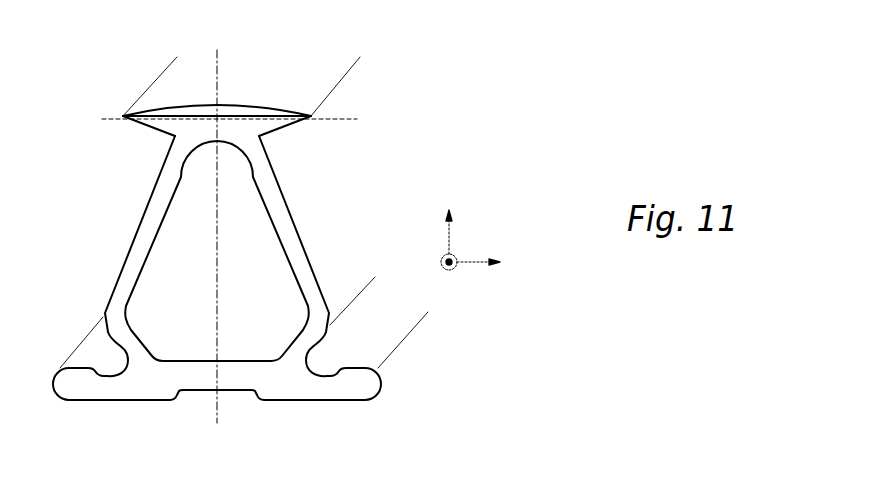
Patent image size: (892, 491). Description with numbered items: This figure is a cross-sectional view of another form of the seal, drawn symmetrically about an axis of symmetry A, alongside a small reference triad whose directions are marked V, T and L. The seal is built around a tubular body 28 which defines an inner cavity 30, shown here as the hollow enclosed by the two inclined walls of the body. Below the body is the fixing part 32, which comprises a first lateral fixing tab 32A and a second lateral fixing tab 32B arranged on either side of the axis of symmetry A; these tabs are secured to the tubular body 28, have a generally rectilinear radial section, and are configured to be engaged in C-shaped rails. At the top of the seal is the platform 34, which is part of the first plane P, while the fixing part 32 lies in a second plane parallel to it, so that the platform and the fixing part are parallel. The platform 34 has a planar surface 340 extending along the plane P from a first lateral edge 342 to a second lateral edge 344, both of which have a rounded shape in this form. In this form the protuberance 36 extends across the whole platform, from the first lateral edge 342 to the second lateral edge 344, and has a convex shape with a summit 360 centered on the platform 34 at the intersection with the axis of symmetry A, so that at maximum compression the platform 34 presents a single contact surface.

The tubular body 28 is at (283, 215).
The inner cavity 30 is at (263, 257).
The fixing part 32 is at (225, 393).
The first lateral fixing tab 32A is at (88, 386).
The second lateral fixing tab 32B is at (345, 385).
The platform 34 is at (152, 62).
The protuberance 36 is at (282, 100).
The planar surface 340 is at (227, 97).
The first lateral edge 342 is at (123, 115).
The second lateral edge 344 is at (311, 117).
The summit 360 is at (217, 106).
The axis of symmetry A is at (218, 50).
The first plane P is at (335, 119).
The vertical direction V is at (449, 229).
The transverse direction T is at (486, 265).
The longitudinal direction L is at (428, 270).